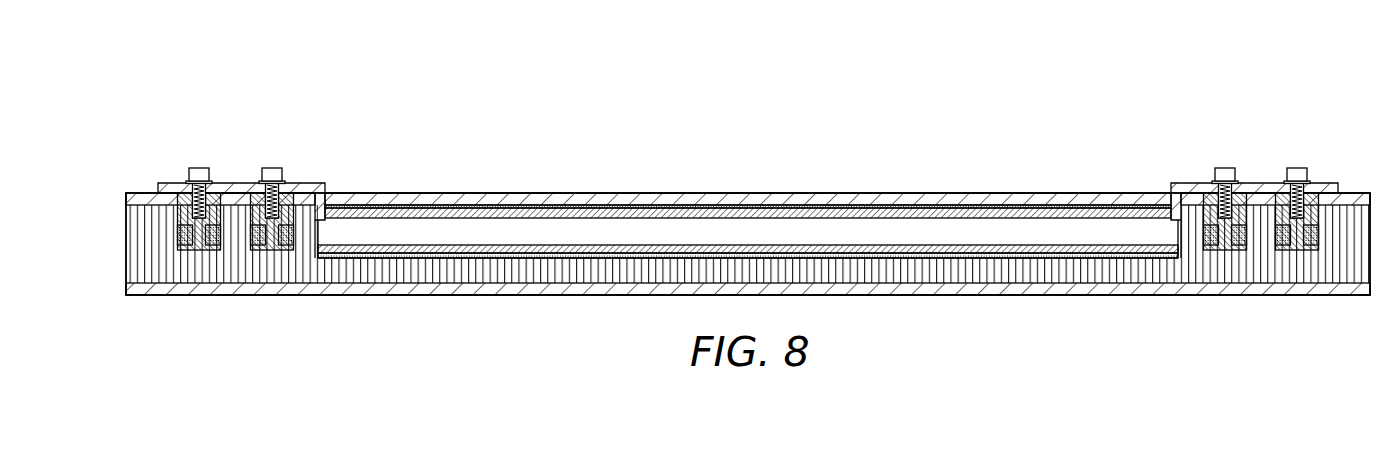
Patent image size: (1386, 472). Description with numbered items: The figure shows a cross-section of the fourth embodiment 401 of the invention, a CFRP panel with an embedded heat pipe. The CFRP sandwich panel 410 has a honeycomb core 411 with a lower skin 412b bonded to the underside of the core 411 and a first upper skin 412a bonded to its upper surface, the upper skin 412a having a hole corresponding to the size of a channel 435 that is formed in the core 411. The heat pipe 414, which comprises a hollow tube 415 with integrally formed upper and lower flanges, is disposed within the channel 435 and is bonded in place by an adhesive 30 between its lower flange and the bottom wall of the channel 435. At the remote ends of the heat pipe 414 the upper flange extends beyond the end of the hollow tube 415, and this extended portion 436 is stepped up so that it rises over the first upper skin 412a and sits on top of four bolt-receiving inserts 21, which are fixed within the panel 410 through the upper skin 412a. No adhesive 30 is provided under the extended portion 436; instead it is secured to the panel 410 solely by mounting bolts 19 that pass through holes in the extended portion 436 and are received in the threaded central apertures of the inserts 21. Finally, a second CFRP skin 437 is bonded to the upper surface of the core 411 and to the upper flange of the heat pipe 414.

The fourth embodiment 401 is at (893, 114).
The CFRP sandwich panel 410 is at (178, 294).
The honeycomb core 411 is at (557, 268).
The upper skin 412a is at (133, 197).
The lower skin 412b is at (440, 293).
The heat pipe 414 is at (528, 212).
The hollow tube 415 is at (965, 215).
The adhesive 30 is at (880, 258).
The channel 435 is at (1017, 258).
The extended portion of the upper flange 436 is at (166, 182).
The second CFRP skin 437 is at (717, 200).
The mounting bolts 19 is at (263, 168).
The bolt-receiving inserts 21 is at (293, 192).